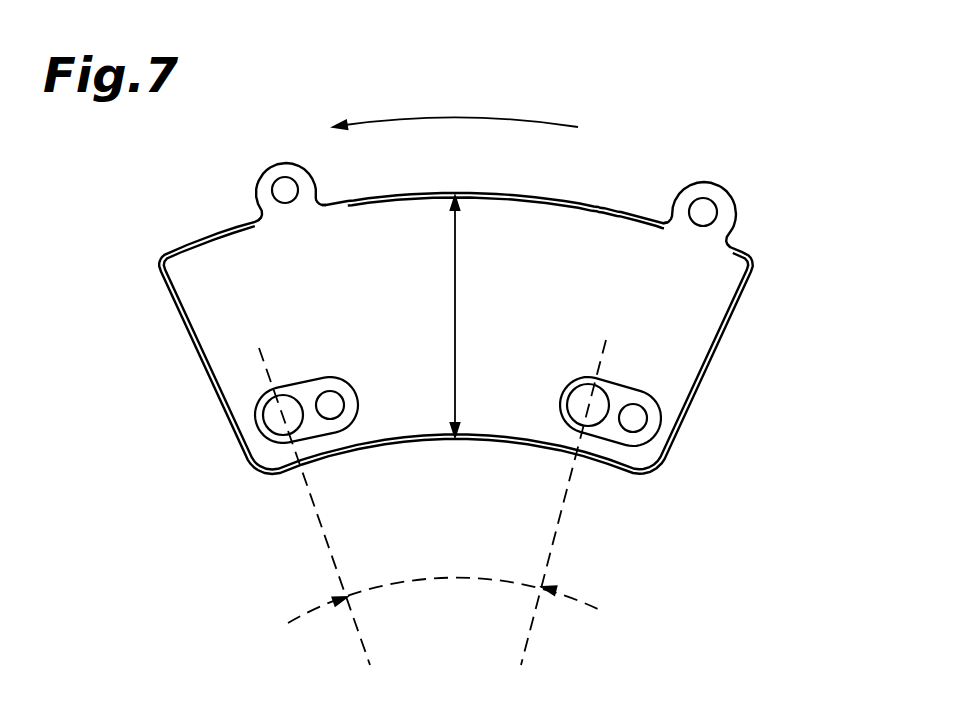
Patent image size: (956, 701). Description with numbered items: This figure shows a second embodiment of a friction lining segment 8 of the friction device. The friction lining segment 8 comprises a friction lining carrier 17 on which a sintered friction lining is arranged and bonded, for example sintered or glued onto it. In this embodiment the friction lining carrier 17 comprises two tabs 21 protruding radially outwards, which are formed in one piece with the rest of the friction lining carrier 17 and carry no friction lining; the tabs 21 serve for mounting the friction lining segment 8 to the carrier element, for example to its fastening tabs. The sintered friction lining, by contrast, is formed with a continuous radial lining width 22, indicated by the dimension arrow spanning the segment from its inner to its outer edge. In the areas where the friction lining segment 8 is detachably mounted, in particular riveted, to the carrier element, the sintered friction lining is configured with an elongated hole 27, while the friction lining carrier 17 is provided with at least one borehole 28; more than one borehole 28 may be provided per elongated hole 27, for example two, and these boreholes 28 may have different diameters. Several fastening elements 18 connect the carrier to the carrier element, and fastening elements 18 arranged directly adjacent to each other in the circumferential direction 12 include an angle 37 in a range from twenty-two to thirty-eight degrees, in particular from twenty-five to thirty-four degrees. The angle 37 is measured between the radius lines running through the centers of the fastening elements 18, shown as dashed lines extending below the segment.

The friction lining segment 8 is at (624, 122).
The circumferential direction 12 is at (457, 117).
The friction lining carrier 17 is at (246, 175).
The fastening element 18 is at (258, 191).
The tab 21 is at (736, 172).
The radial lining width 22 is at (455, 268).
The elongated hole 27 is at (612, 458).
The borehole 28 is at (658, 412).
The angle 37 is at (445, 578).